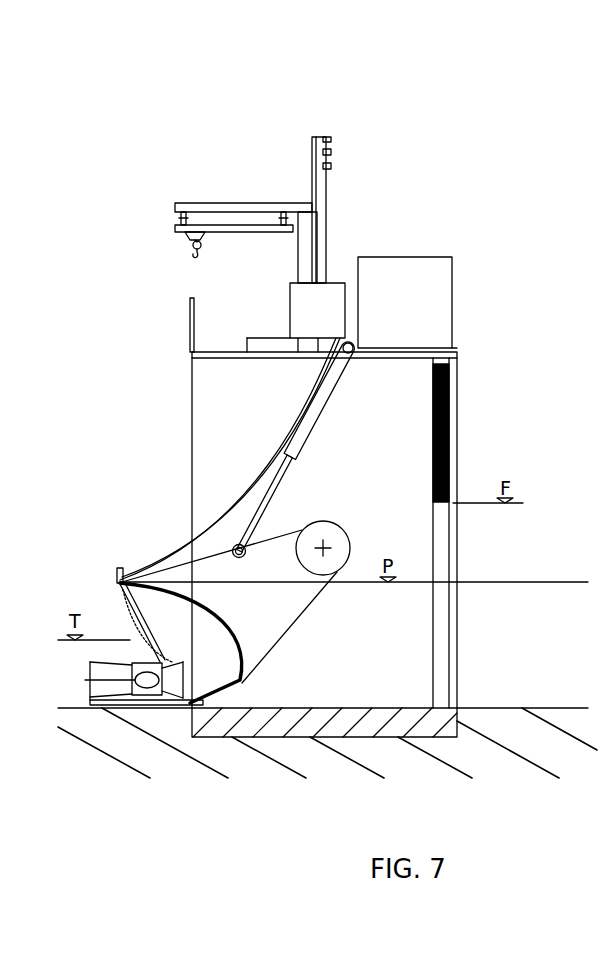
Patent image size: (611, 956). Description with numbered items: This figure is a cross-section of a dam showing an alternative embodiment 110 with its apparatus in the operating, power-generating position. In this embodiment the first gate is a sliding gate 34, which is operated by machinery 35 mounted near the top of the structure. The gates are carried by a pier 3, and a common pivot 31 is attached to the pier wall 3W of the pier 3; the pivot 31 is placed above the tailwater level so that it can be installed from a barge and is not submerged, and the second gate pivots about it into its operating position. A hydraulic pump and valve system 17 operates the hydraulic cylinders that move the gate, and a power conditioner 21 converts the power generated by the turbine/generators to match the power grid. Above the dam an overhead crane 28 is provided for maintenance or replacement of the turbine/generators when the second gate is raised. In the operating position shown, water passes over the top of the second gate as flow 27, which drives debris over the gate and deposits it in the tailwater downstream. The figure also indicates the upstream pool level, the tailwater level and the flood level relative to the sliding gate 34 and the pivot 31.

The alternative embodiment 110 is at (430, 190).
The overhead crane 28 is at (193, 247).
The power conditioner 21 is at (332, 322).
The hydraulic pump and valve system 17 is at (417, 311).
The machinery 35 is at (451, 292).
The pier wall 3W is at (234, 404).
The pier 3 is at (203, 437).
The sliding gate 34 is at (448, 422).
The common pivot 31 is at (325, 548).
The flow 27 is at (97, 638).